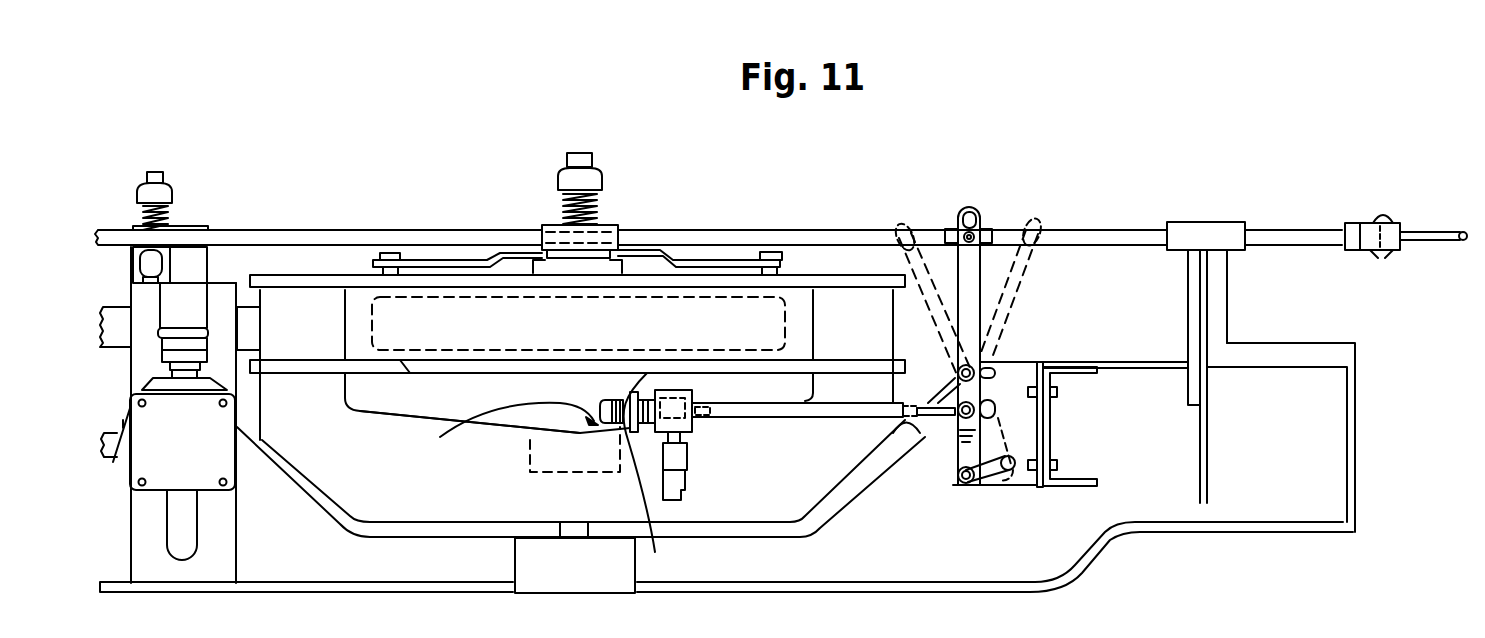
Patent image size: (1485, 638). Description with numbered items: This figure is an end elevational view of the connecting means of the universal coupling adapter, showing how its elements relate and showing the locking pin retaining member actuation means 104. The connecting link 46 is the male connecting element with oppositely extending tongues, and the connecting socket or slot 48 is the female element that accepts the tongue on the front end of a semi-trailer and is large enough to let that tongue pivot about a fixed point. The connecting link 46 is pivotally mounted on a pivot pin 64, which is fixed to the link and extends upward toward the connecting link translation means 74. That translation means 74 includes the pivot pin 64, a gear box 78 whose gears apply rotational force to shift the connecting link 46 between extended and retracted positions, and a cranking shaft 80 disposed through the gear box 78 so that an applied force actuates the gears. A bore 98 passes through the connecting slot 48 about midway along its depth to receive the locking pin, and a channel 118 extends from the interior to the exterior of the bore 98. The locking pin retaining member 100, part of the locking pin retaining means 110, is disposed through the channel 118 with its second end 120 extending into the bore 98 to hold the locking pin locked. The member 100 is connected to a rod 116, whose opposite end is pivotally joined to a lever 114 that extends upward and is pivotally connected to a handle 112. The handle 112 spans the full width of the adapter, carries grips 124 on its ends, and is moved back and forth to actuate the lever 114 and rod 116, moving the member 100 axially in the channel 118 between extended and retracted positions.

The connecting link 46 is at (118, 306).
The connecting socket or slot 48 is at (598, 335).
The pivot pin 64 is at (172, 205).
The connecting link translation means 74 is at (362, 222).
The gear box 78 is at (224, 490).
The cranking shaft 80 is at (113, 455).
The bore 98 is at (520, 377).
The locking pin retaining member 100 is at (628, 470).
The locking pin retaining member actuation means 104 is at (1074, 423).
The locking pin retaining means 110 is at (530, 440).
The handle 112 is at (308, 229).
The lever 114 is at (982, 213).
The rod 116 is at (825, 420).
The channel 118 is at (657, 472).
The second end of the member 120 is at (500, 429).
The grips 124 is at (1466, 241).